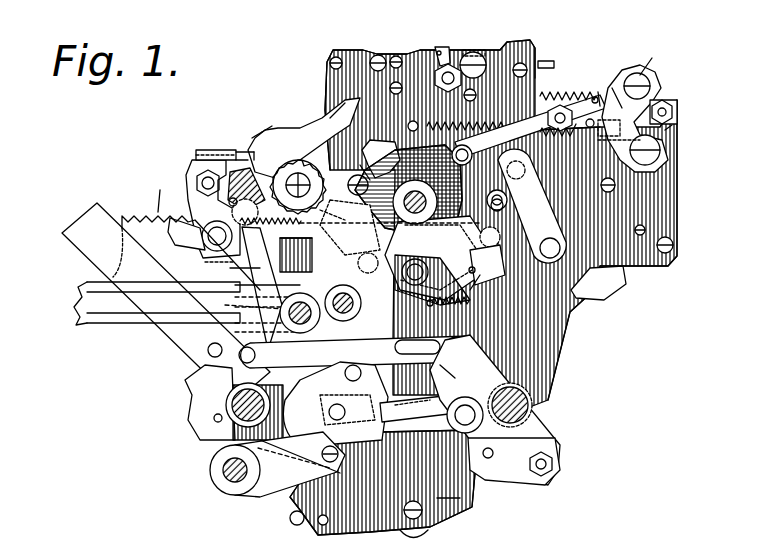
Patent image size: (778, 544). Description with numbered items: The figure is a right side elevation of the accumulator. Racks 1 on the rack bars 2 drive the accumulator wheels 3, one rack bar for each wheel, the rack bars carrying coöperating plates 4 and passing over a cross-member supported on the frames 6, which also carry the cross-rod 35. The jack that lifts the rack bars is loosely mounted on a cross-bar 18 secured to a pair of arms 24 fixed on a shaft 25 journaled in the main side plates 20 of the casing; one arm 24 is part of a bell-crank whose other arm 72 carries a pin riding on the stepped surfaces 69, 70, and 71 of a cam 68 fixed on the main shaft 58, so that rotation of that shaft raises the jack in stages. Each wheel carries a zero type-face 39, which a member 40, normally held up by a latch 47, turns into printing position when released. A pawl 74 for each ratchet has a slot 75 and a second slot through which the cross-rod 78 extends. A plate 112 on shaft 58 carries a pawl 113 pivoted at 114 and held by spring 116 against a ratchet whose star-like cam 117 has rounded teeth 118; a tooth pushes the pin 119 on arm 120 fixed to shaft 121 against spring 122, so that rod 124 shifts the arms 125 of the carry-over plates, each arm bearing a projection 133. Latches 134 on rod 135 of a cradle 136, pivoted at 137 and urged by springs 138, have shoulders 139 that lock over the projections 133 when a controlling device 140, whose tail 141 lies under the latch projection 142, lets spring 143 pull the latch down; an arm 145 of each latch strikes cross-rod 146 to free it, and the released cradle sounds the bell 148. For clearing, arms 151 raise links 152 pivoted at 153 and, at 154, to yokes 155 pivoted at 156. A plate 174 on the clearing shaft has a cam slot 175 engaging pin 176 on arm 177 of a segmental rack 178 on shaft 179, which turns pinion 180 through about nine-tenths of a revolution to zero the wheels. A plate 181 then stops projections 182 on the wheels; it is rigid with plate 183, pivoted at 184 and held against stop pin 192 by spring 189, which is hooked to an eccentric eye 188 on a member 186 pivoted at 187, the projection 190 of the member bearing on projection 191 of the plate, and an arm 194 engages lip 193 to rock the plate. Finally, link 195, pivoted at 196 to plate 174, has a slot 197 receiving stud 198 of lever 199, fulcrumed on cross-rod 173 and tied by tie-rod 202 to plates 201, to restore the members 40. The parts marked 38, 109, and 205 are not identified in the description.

The rack 1 is at (158, 212).
The rack bar 2 is at (186, 253).
The accumulator wheel 3 is at (304, 156).
The plate 4 is at (75, 300).
The frame 6 is at (80, 223).
The cross-bar 18 is at (339, 414).
The main side plate 20 is at (555, 333).
The arm 24 is at (347, 410).
The shaft 25 is at (458, 416).
The cross-rod 35 is at (205, 368).
The arm 38 is at (261, 131).
The zero type-face 39 is at (288, 126).
The member 40 is at (426, 532).
The latch 47 is at (598, 283).
The shaft 58 is at (416, 196).
The cam 68 is at (368, 262).
The stepped surface 69 is at (517, 170).
The stepped surface 70 is at (490, 237).
The stepped surface 71 is at (487, 265).
The bell-crank arm 72 is at (489, 258).
The pawl 74 is at (441, 47).
The slot 75 is at (496, 205).
The cross-rod 78 is at (450, 70).
The screw 109 is at (673, 244).
The plate 112 is at (442, 258).
The pawl 113 is at (451, 286).
The pivot 114 is at (426, 280).
The spring 116 is at (480, 288).
The cam 117 is at (390, 227).
The tooth 118 is at (406, 183).
The pin 119 is at (463, 155).
The arm 120 is at (532, 206).
The shaft 121 is at (550, 243).
The spring 122 is at (470, 136).
The rod 124 is at (558, 123).
The arm 125 is at (612, 86).
The projection 133 is at (606, 94).
The latch 134 is at (575, 105).
The rod 135 is at (652, 58).
The cradle 136 is at (619, 132).
The pivot 137 is at (660, 146).
The spring 138 is at (562, 80).
The shoulder 139 is at (596, 97).
The controlling device 140 is at (520, 38).
The tail 141 is at (548, 92).
The projection 142 is at (546, 60).
The spring 143 is at (622, 105).
The arm 145 is at (666, 100).
The cross-rod 146 is at (670, 126).
The bell 148 is at (223, 466).
The arm 151 is at (290, 464).
The link 152 is at (256, 313).
The pivot 153 is at (322, 456).
The pivot 154 is at (269, 237).
The yoke 155 is at (380, 159).
The pivot 156 is at (372, 170).
The cross-rod 173 is at (523, 410).
The plate 174 is at (335, 404).
The cam slot 175 is at (382, 413).
The pin 176 is at (418, 400).
The arm 177 is at (320, 310).
The segmental rack 178 is at (330, 215).
The shaft 179 is at (392, 272).
The pinion 180 is at (317, 133).
The plate 181 is at (228, 160).
The projection 182 is at (240, 155).
The plate 183 is at (198, 167).
The pivot 184 is at (214, 165).
The member 186 is at (237, 275).
The pivot 187 is at (259, 254).
The eccentric eye 188 is at (232, 214).
The spring 189 is at (296, 248).
The projection 190 is at (206, 270).
The projection 191 is at (203, 252).
The stop pin 192 is at (250, 178).
The lip 193 is at (258, 291).
The arm 194 is at (277, 288).
The link 195 is at (354, 352).
The pivot 196 is at (240, 411).
The slot 197 is at (440, 360).
The stud 198 is at (460, 342).
The lever 199 is at (510, 400).
The plate 201 is at (494, 462).
The tie-rod 202 is at (550, 459).
The link 205 is at (299, 466).